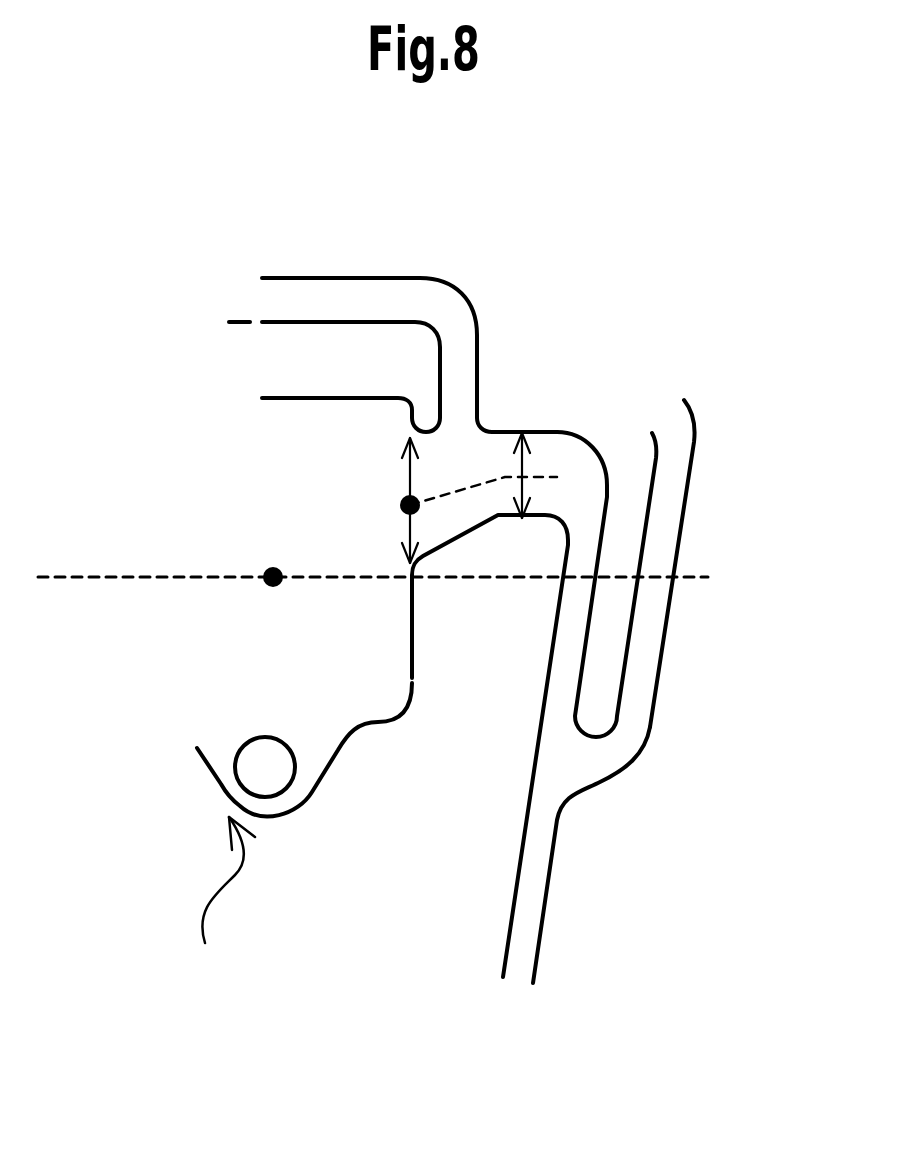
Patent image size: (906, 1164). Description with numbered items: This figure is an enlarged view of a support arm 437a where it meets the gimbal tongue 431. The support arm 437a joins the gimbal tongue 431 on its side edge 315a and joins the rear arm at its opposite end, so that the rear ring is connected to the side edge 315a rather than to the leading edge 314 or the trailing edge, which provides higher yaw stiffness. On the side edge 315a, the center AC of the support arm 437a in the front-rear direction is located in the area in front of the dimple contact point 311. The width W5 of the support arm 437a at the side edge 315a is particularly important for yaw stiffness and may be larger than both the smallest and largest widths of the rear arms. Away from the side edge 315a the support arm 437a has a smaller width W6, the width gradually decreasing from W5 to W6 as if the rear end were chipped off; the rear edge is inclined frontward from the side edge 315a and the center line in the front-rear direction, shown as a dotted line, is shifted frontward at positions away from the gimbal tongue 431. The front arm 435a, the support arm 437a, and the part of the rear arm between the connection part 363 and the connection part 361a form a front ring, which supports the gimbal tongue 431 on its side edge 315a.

The support arm 437a is at (545, 430).
The connection part 361a is at (582, 437).
The front arm 435a is at (660, 658).
The connection part 363 is at (580, 785).
The side edge 315a is at (415, 622).
The leading edge 314 is at (343, 767).
The gimbal tongue 431 is at (207, 904).
The dimple contact point 311 is at (262, 588).
The center of the support arm AC is at (459, 500).
The width of the support arm at the side edge W5 is at (433, 500).
The smaller width of the support arm W6 is at (543, 475).